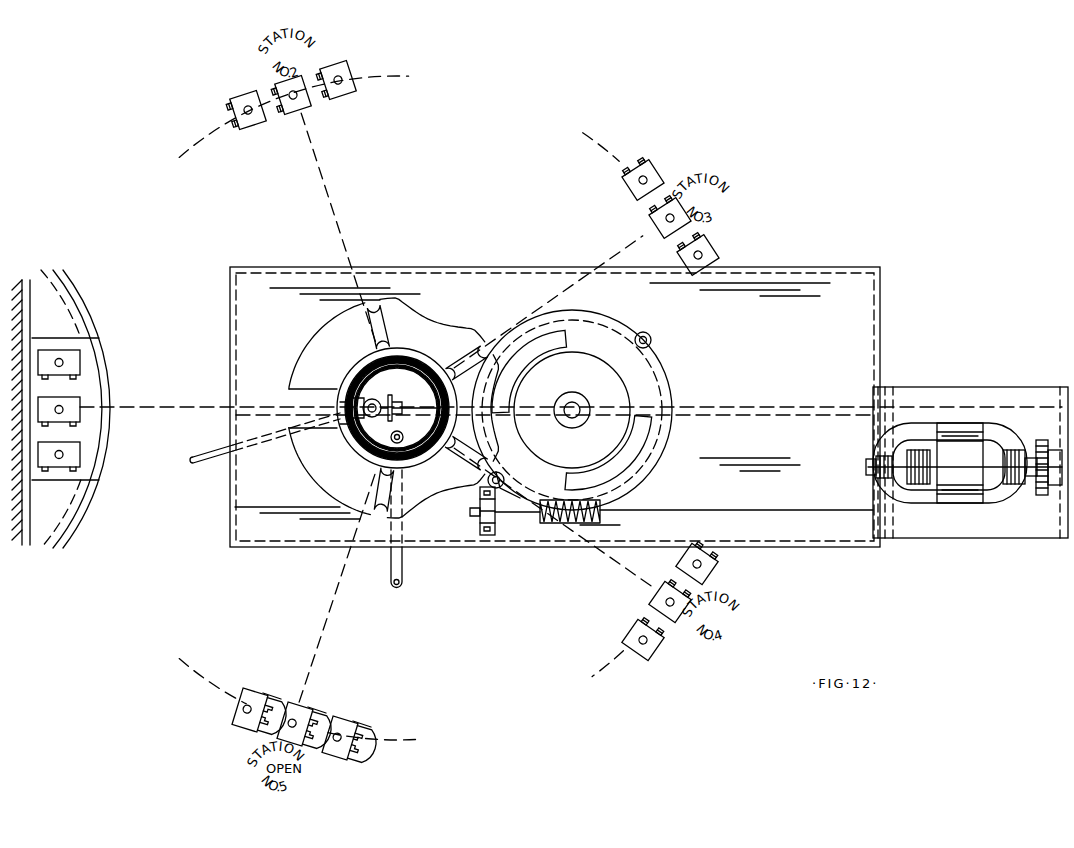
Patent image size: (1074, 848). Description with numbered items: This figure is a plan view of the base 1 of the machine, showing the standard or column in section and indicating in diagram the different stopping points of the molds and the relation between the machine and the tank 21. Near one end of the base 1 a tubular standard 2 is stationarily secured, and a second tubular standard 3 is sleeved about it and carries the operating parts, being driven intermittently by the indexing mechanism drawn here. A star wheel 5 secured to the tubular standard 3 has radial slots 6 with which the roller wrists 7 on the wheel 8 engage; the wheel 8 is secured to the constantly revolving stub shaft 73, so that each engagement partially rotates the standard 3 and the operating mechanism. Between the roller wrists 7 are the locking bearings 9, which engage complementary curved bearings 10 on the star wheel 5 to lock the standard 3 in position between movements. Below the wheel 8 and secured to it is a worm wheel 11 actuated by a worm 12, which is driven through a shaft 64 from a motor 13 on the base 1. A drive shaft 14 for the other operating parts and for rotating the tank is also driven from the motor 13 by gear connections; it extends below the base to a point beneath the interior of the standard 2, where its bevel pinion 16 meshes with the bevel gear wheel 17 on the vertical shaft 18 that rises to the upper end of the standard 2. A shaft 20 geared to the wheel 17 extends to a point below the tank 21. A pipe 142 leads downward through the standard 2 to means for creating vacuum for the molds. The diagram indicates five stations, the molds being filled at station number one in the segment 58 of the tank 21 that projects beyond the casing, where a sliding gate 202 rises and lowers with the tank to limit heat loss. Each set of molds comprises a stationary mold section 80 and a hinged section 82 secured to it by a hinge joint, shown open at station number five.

The base 1 is at (555, 407).
The tubular standard 2 is at (404, 372).
The tubular standard 3 is at (428, 352).
The star wheel 5 is at (344, 355).
The radial slots 6 is at (364, 320).
The roller wrists 7 is at (652, 341).
The wheel 8 is at (572, 410).
The locking bearings 9 is at (528, 346).
The curved bearings 10 is at (318, 368).
The worm wheel 11 is at (666, 383).
The worm 12 is at (601, 516).
The motor 13 is at (960, 462).
The drive shaft 14 is at (765, 404).
The bevel pinion 16 is at (391, 398).
The bevel gear wheel 17 is at (352, 430).
The vertical shaft 18 is at (347, 418).
The shaft 20 is at (188, 459).
The tank 21 is at (106, 352).
The segment 58 is at (78, 384).
The shaft 64 is at (790, 511).
The stub shaft 73 is at (577, 416).
The stationary mold section 80 is at (74, 417).
The hinged section 82 is at (275, 700).
The pipe 142 is at (404, 574).
The sliding gate 202 is at (34, 294).